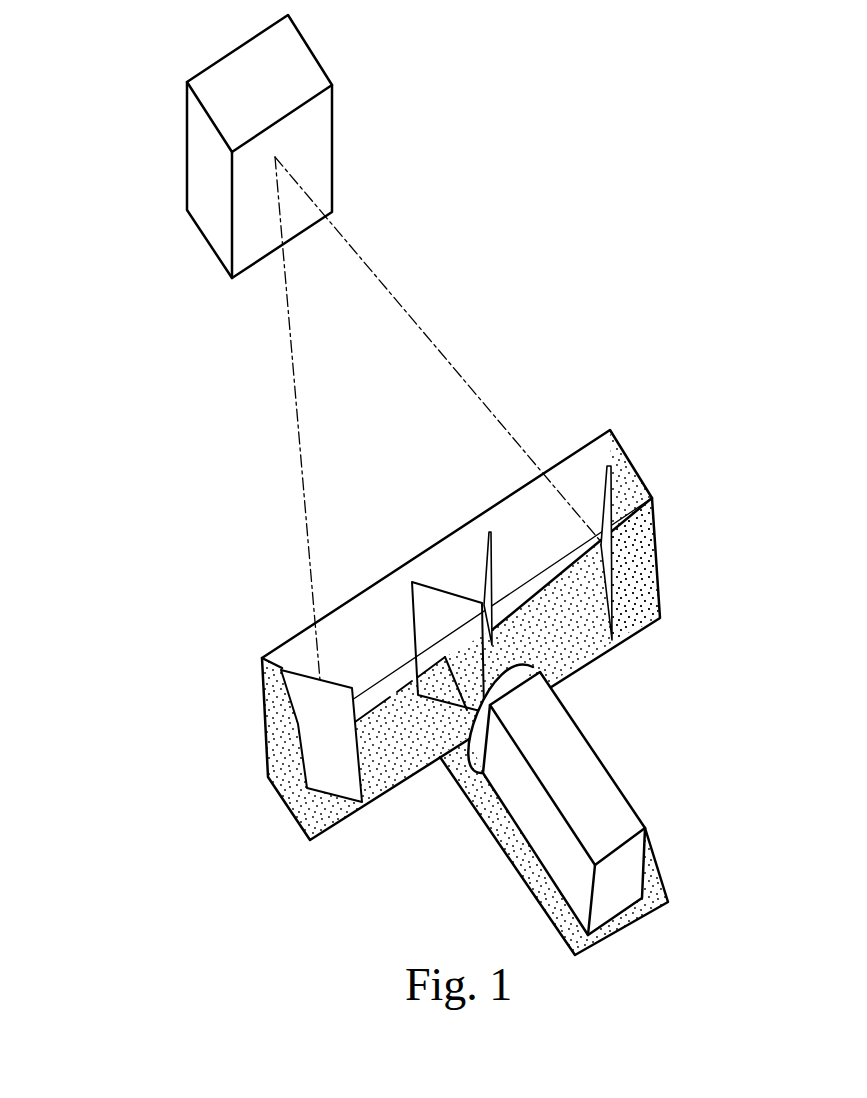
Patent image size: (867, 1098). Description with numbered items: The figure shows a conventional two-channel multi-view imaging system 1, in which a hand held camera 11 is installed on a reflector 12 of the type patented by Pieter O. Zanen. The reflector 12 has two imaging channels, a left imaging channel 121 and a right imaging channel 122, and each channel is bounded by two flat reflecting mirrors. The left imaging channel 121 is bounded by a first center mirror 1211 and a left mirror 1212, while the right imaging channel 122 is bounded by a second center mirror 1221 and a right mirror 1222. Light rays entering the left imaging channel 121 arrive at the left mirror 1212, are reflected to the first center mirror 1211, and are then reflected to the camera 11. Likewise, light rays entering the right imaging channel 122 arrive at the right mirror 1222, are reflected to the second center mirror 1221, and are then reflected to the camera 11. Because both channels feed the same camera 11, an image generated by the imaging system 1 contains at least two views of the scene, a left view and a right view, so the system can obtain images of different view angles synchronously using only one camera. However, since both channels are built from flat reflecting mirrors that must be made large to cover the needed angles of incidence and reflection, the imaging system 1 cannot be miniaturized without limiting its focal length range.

The two-channel multi-view imaging system 1 is at (662, 250).
The hand held camera 11 is at (568, 770).
The reflector 12 is at (632, 460).
The left imaging channel 121 is at (312, 655).
The right imaging channel 122 is at (588, 472).
The first center mirror 1211 is at (432, 615).
The left mirror 1212 is at (305, 694).
The second center mirror 1221 is at (483, 570).
The right mirror 1222 is at (618, 547).